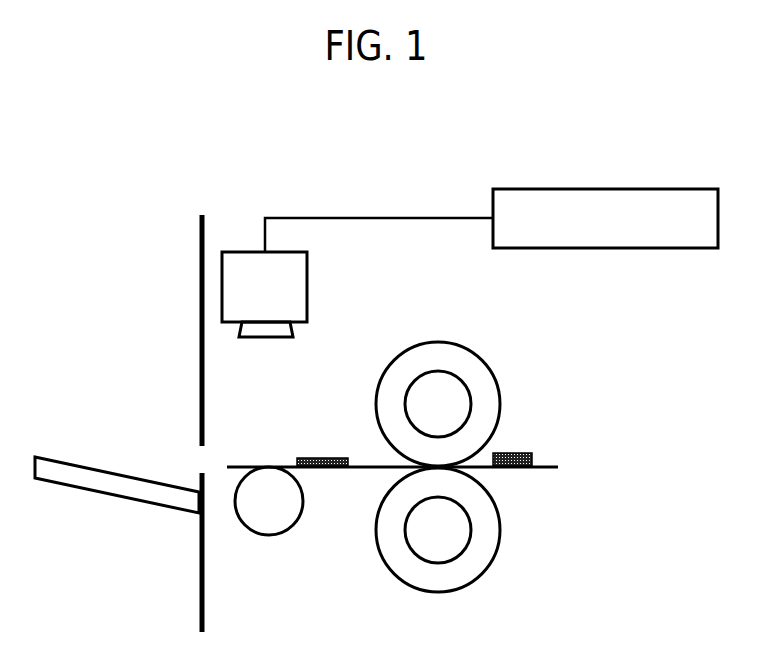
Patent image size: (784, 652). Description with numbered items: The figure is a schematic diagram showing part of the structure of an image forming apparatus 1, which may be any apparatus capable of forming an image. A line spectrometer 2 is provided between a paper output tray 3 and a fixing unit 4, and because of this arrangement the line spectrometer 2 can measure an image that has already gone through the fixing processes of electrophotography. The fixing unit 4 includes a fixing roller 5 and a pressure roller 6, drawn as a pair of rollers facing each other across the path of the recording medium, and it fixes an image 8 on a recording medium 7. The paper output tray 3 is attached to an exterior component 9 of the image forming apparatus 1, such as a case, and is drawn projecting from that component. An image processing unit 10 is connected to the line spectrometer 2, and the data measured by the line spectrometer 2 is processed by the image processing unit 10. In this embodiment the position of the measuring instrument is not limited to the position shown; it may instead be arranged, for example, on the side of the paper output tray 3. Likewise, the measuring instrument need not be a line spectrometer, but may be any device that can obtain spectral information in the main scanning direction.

The image forming apparatus 1 is at (361, 170).
The line spectrometer 2 is at (247, 252).
The paper output tray 3 is at (98, 470).
The fixing unit 4 is at (404, 325).
The fixing roller 5 is at (475, 362).
The pressure roller 6 is at (475, 572).
The recording medium 7 is at (548, 466).
The image 8 is at (323, 457).
The exterior component 9 is at (200, 586).
The image processing unit 10 is at (670, 189).